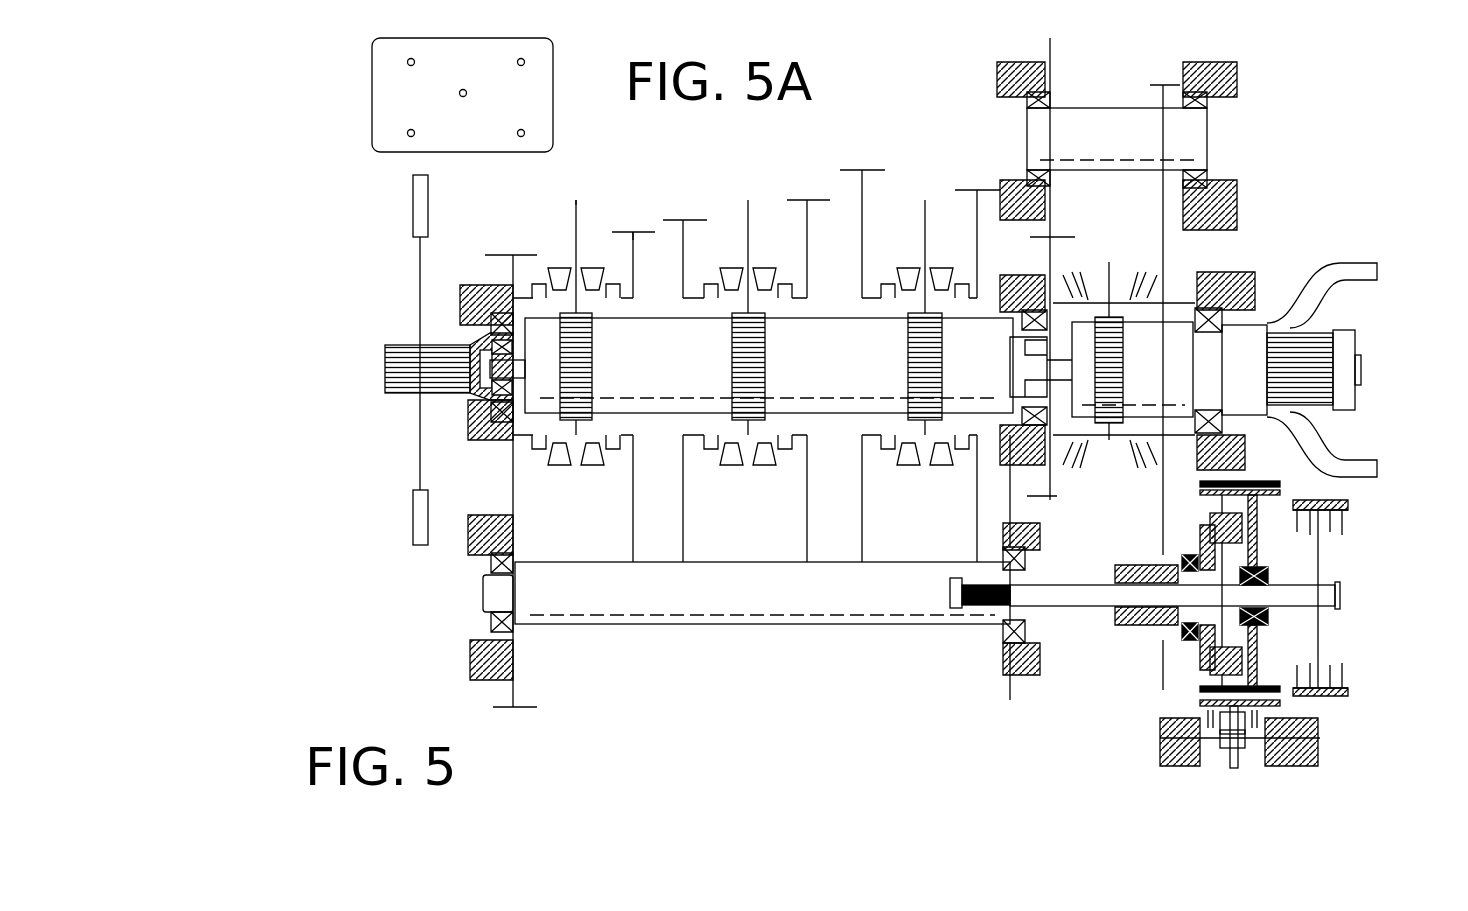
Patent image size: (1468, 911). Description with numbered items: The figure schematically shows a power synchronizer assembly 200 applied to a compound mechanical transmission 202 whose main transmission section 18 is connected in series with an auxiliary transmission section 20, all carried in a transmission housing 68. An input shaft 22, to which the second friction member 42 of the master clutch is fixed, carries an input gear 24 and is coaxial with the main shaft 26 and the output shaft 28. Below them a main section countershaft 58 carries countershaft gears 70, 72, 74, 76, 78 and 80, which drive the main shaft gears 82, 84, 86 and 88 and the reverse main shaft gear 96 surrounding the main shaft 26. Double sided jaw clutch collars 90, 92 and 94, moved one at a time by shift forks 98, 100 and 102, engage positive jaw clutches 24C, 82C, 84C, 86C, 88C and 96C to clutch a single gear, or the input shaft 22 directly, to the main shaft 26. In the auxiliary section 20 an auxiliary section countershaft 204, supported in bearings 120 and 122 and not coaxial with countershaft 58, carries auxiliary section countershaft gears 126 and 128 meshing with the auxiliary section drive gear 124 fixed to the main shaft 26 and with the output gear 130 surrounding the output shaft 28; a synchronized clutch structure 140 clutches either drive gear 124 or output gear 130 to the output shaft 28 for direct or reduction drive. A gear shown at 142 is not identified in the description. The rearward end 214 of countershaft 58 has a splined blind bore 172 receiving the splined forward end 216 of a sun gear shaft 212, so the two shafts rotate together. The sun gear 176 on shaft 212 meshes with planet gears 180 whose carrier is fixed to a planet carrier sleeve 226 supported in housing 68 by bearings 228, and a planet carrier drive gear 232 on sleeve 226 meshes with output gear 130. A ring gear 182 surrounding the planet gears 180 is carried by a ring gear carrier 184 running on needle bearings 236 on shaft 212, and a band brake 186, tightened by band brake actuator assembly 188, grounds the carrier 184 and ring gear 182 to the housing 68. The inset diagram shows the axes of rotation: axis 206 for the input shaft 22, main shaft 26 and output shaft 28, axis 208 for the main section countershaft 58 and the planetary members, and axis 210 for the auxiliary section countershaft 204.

In FIG. 5, the main transmission section 18 is at (1047, 718).
In FIG. 5, the auxiliary transmission section 20 is at (1234, 765).
In FIG. 5, the input shaft 22 is at (385, 381).
In FIG. 5, the input gear 24 is at (514, 274).
In FIG. 5, the positive jaw clutch 24C is at (550, 462).
In FIG. 5, the main shaft 26 is at (798, 365).
In FIG. 5, the output shaft 28 is at (1216, 369).
In FIG. 5, the second friction member 42 is at (428, 200).
In FIG. 5, the main section countershaft 58 is at (805, 624).
In FIG. 5A, the transmission housing 68 is at (470, 152).
In FIG. 5, the transmission housing 68 is at (470, 660).
In FIG. 5, the countershaft gear 70 is at (513, 665).
In FIG. 5, the countershaft gear 72 is at (633, 624).
In FIG. 5, the countershaft gear 74 is at (683, 624).
In FIG. 5, the countershaft gear 76 is at (862, 624).
In FIG. 5, the countershaft gear 78 is at (842, 548).
In FIG. 5, the countershaft gear 80 is at (974, 563).
In FIG. 5, the main shaft gear 82 is at (617, 265).
In FIG. 5, the positive jaw clutch 82C is at (607, 462).
In FIG. 5, the main shaft gear 84 is at (683, 240).
In FIG. 5, the positive jaw clutch 84C is at (720, 462).
In FIG. 5, the main shaft gear 86 is at (807, 240).
In FIG. 5, the positive jaw clutch 86C is at (778, 462).
In FIG. 5, the main shaft gear 88 is at (862, 245).
In FIG. 5, the positive jaw clutch 88C is at (890, 468).
In FIG. 5, the jaw clutch collar 90 is at (576, 268).
In FIG. 5, the jaw clutch collar 92 is at (752, 272).
In FIG. 5, the jaw clutch collar 94 is at (927, 272).
In FIG. 5, the reverse main shaft gear 96 is at (977, 255).
In FIG. 5, the positive jaw clutch 96C is at (955, 462).
In FIG. 5, the shift fork 98 is at (577, 226).
In FIG. 5, the shift fork 100 is at (751, 233).
In FIG. 5, the shift fork 102 is at (928, 233).
In FIG. 5, the bearing 120 is at (1050, 100).
In FIG. 5, the bearing 122 is at (1207, 178).
In FIG. 5, the auxiliary section drive gear 124 is at (1038, 263).
In FIG. 5, the auxiliary section countershaft gear 126 is at (1050, 60).
In FIG. 5, the auxiliary section countershaft gear 128 is at (1117, 139).
In FIG. 5, the output gear 130 is at (1163, 195).
In FIG. 5, the synchronized clutch structure 140 is at (1085, 268).
In FIG. 5, the gear 142 is at (1130, 250).
In FIG. 5, the blind bore 172 is at (965, 610).
In FIG. 5, the sun gear 176 is at (1222, 568).
In FIG. 5, the planet gears 180 is at (1210, 515).
In FIG. 5, the ring gear 182 is at (1255, 468).
In FIG. 5, the ring gear carrier 184 is at (1262, 505).
In FIG. 5, the band brake 186 is at (1240, 485).
In FIG. 5, the band brake actuator assembly 188 is at (1338, 718).
In FIG. 5, the power synchronizer assembly 200 is at (1372, 561).
In FIG. 5A, the compound mechanical transmission 202 is at (556, 86).
In FIG. 5, the compound mechanical transmission 202 is at (940, 150).
In FIG. 5, the auxiliary section countershaft 204 is at (1160, 115).
In FIG. 5A, the axis of rotation 206 is at (460, 93).
In FIG. 5A, the axis of rotation 208 is at (410, 128).
In FIG. 5A, the axis of rotation 210 is at (408, 62).
In FIG. 5, the sun gear shaft 212 is at (1340, 596).
In FIG. 5, the rearward end 214 is at (1025, 630).
In FIG. 5, the forward end 216 is at (998, 550).
In FIG. 5, the planet carrier sleeve 226 is at (1130, 565).
In FIG. 5, the bearings 228 is at (1195, 645).
In FIG. 5, the planet carrier drive gear 232 is at (1180, 645).
In FIG. 5, the needle bearings 236 is at (1270, 612).